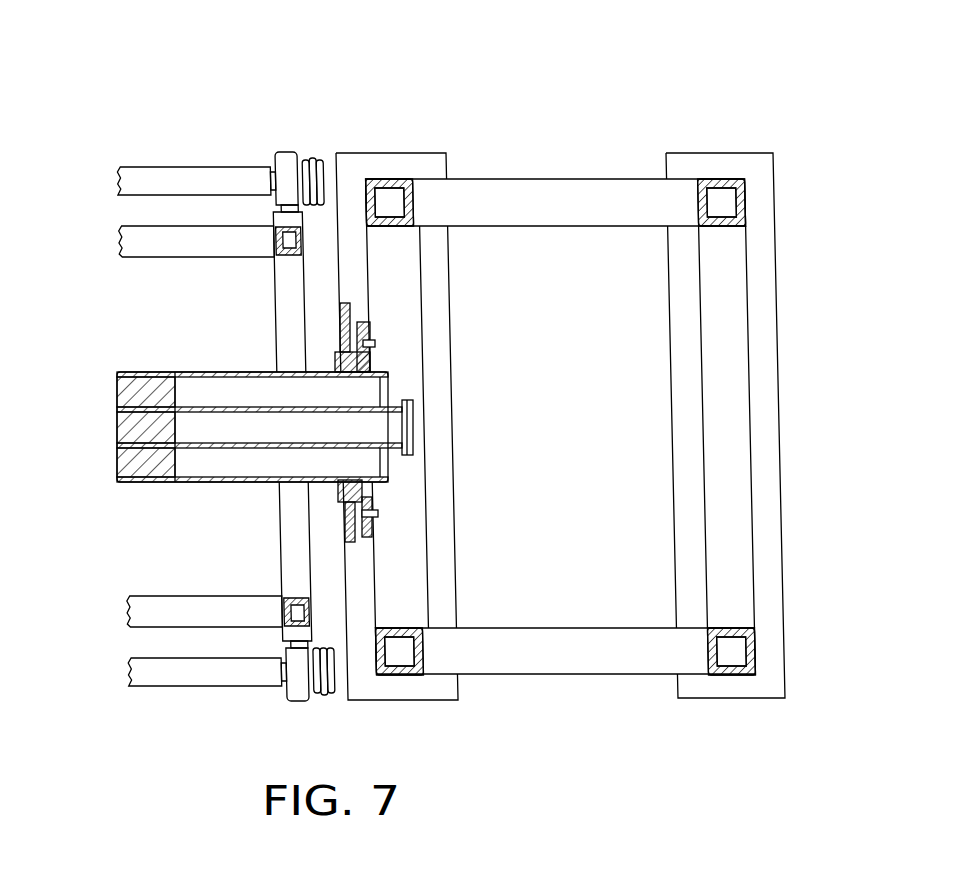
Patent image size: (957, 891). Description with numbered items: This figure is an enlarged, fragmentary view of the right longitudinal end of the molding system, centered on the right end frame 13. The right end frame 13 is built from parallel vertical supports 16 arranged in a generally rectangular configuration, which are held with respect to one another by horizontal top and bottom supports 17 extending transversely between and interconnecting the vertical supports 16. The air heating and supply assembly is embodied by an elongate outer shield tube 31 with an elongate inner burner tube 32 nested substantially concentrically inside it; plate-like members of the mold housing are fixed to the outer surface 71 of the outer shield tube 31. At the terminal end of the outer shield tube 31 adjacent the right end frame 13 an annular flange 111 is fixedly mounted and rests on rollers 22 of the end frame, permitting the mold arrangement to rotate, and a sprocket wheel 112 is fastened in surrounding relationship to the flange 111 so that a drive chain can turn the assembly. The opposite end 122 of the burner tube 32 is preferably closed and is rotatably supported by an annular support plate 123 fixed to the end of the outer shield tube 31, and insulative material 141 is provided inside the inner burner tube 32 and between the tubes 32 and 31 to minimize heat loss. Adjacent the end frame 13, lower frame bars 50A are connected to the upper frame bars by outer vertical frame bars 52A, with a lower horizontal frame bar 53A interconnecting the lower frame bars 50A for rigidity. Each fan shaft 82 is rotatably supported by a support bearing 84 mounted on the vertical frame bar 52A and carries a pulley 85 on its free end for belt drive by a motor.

The right end frame 13 is at (525, 93).
The vertical support 16 is at (412, 207).
The horizontal support 17 is at (568, 192).
The roller 22 is at (370, 313).
The outer shield tube 31 is at (188, 372).
The inner burner tube 32 is at (200, 480).
The lower frame bar 50A is at (150, 247).
The outer vertical frame bar 52A is at (273, 232).
The lower horizontal frame bar 53A is at (283, 547).
The outer surface 71 is at (133, 357).
The shaft 82 is at (166, 177).
The support bearing 84 is at (283, 152).
The pulley 85 is at (308, 158).
The annular flange 111 is at (337, 353).
The sprocket wheel 112 is at (342, 300).
The end of burner tube 122 is at (403, 397).
The annular support plate 123 is at (398, 468).
The insulative material 141 is at (115, 450).